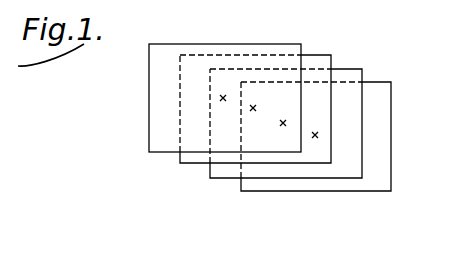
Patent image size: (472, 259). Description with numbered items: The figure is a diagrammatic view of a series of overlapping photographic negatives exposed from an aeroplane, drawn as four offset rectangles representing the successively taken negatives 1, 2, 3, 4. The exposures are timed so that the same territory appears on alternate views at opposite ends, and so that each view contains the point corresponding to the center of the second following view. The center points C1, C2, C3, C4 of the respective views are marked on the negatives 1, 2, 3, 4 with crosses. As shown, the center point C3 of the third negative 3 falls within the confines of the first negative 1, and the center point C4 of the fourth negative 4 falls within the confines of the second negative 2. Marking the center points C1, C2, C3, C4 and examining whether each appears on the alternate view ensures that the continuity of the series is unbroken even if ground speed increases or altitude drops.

The center point C1 is at (222, 103).
The center point C2 is at (250, 112).
The center point C3 is at (281, 125).
The center point C4 is at (314, 137).
The negative 1 is at (224, 104).
The negative 2 is at (254, 114).
The negative 3 is at (284, 129).
The negative 4 is at (316, 141).